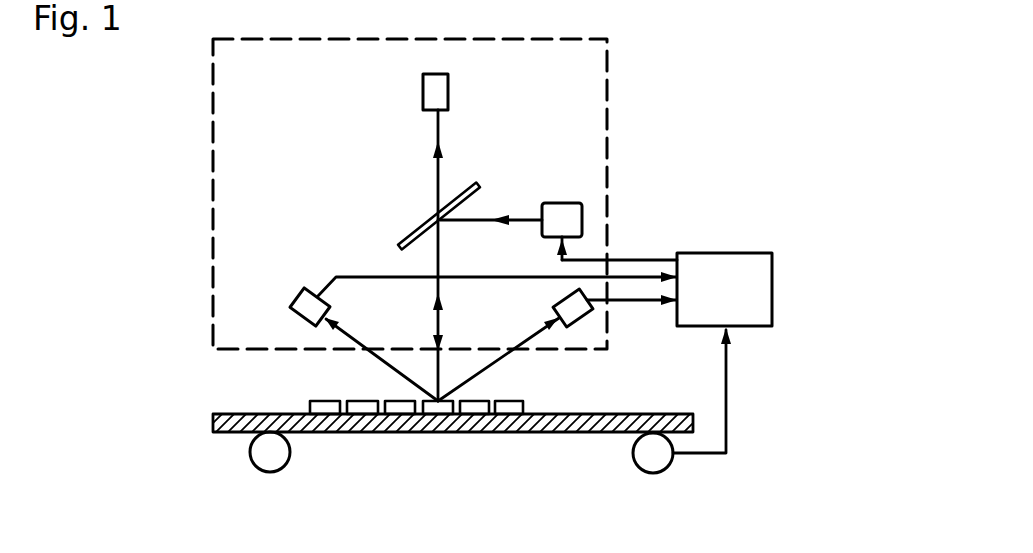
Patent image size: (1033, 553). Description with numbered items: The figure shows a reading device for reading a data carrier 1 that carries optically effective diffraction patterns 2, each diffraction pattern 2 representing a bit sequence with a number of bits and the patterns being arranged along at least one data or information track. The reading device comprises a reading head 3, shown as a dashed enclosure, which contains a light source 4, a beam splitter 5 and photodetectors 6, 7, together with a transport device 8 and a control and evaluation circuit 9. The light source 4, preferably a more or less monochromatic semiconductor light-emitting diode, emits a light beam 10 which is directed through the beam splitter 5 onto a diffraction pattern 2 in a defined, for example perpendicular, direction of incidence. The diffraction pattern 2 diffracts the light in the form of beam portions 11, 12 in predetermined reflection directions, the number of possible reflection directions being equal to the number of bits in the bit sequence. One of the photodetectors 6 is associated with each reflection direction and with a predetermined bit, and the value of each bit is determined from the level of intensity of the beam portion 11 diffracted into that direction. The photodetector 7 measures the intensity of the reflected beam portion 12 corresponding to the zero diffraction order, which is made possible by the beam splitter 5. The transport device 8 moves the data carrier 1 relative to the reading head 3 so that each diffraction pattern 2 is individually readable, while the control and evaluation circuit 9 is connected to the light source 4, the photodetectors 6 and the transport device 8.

The data carrier 1 is at (681, 418).
The diffraction patterns 2 is at (328, 413).
The reading head 3 is at (607, 39).
The light source 4 is at (561, 212).
The beam splitter 5 is at (416, 232).
The photodetectors 6 is at (300, 300).
The photodetector 7 is at (448, 93).
The transport device 8 is at (640, 458).
The control and evaluation circuit 9 is at (762, 281).
The light beam 10 is at (441, 347).
The beam portions 11 is at (366, 352).
The reflected beam portion 12 is at (440, 176).